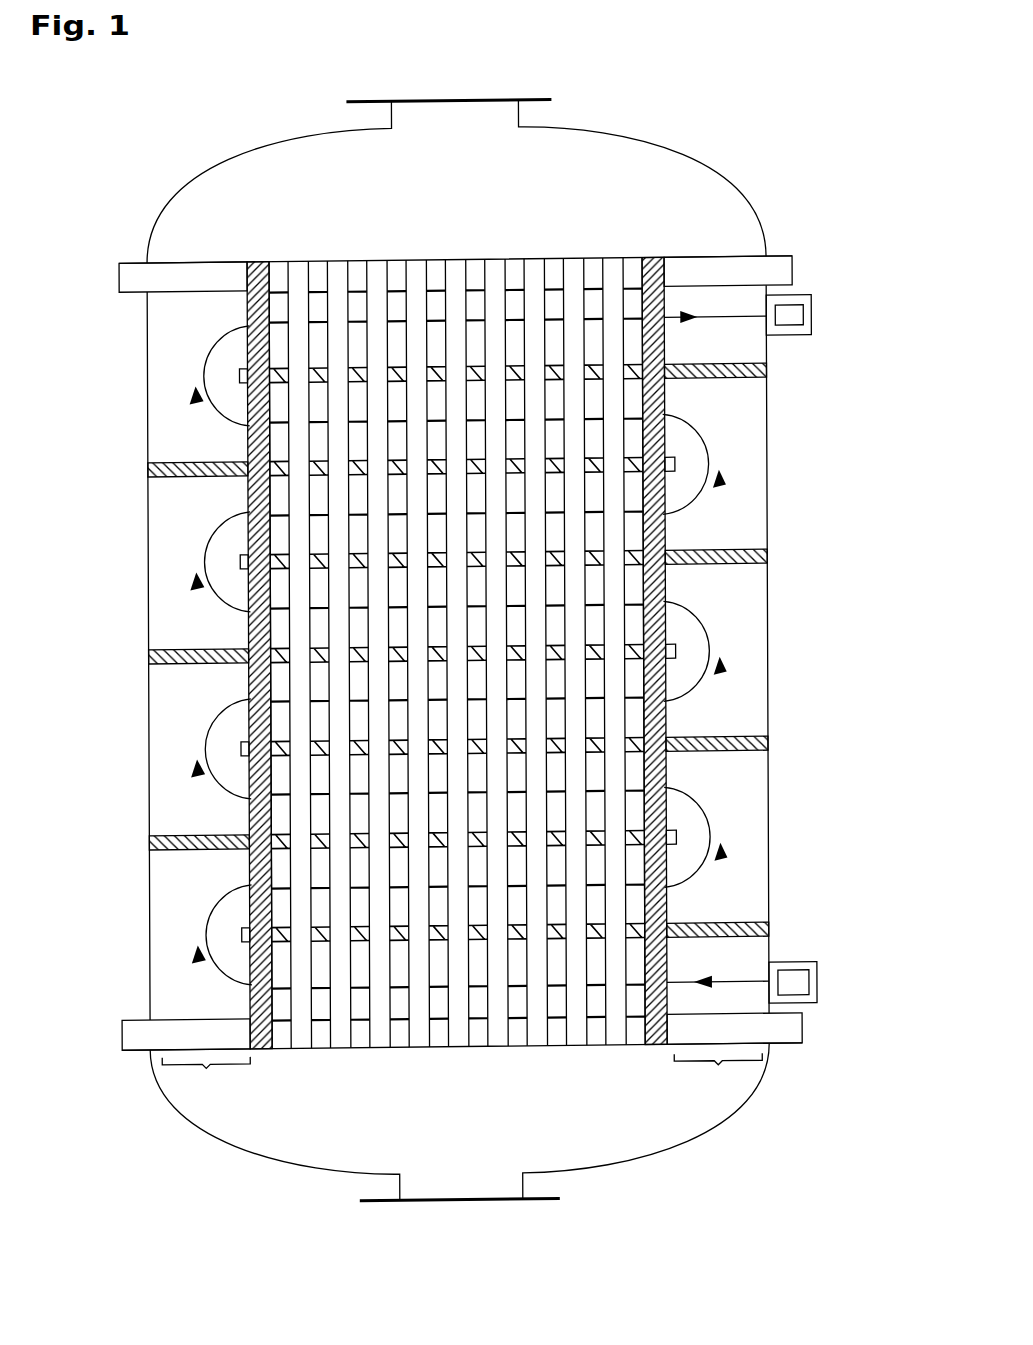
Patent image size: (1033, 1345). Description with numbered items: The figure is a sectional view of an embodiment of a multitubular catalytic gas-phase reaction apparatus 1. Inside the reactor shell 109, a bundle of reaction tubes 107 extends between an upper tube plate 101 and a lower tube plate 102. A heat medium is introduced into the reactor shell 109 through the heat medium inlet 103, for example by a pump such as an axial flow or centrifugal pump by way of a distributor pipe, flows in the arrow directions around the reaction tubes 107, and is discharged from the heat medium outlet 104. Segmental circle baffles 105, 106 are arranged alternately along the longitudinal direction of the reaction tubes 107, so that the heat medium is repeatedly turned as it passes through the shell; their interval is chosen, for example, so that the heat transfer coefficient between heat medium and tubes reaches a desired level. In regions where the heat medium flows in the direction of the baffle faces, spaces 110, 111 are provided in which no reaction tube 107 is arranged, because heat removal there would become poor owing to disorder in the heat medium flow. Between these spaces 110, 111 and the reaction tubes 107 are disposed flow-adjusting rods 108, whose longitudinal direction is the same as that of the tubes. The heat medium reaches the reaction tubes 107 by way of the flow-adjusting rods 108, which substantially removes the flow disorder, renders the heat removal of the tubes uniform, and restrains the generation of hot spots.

The multitubular reaction apparatus 1 is at (72, 173).
The upper tube plate 101 is at (782, 275).
The lower tube plate 102 is at (787, 1035).
The heat medium inlet 103 is at (805, 989).
The heat medium outlet 104 is at (787, 322).
The baffle 105 is at (737, 386).
The baffle 106 is at (150, 475).
The reaction tube 107 is at (304, 1032).
The flow-adjusting rod 108 is at (264, 1050).
The reactor shell 109 is at (780, 652).
The space 110 is at (206, 1080).
The space 111 is at (718, 1076).